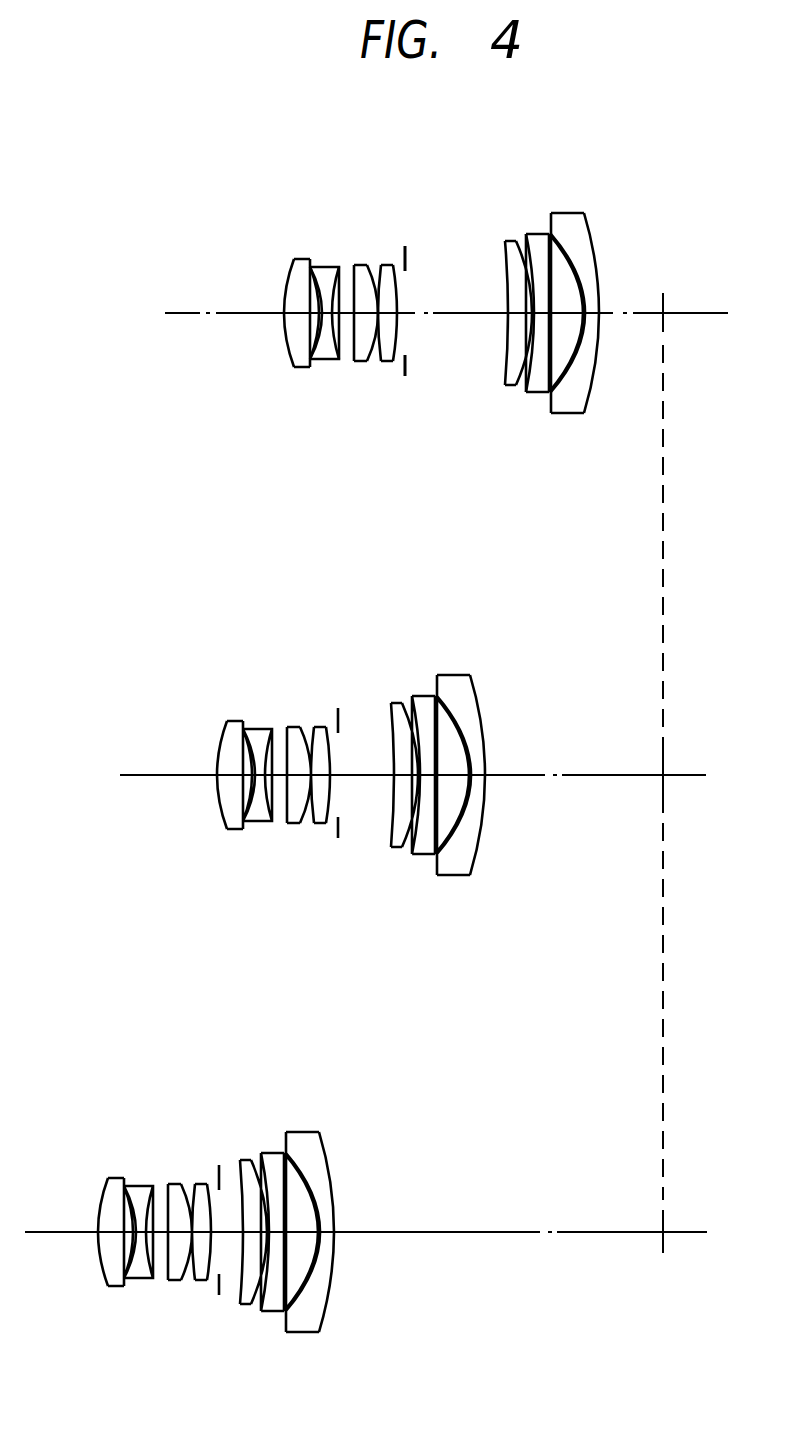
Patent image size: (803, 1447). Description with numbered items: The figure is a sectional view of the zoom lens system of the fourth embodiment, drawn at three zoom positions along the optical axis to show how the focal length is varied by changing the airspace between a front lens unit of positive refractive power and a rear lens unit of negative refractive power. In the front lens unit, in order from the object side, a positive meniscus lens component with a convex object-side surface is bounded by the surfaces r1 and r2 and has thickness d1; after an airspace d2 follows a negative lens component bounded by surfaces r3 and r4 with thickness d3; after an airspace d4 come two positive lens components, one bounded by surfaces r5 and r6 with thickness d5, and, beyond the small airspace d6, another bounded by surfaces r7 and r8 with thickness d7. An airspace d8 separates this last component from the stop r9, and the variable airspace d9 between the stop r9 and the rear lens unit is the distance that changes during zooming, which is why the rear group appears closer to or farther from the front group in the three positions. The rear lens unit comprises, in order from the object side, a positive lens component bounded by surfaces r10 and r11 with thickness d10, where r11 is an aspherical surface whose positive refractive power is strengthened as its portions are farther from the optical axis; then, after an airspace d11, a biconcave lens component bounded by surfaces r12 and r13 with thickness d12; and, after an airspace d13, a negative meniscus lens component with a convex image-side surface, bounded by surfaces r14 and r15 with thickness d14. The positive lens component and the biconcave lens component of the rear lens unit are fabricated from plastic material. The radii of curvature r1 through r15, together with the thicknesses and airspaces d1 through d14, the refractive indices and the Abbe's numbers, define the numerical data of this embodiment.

The radius of curvature of first lens surface r1 is at (284, 287).
The radius of curvature of second lens surface r2 is at (300, 277).
The radius of curvature of third lens surface r3 is at (315, 277).
The radius of curvature of fourth lens surface r4 is at (337, 278).
The radius of curvature of fifth lens surface r5 is at (353, 272).
The radius of curvature of sixth lens surface r6 is at (374, 278).
The radius of curvature of seventh lens surface r7 is at (382, 272).
The radius of curvature of eighth lens surface r8 is at (398, 272).
The stop r9 is at (406, 252).
The radius of curvature of tenth lens surface r10 is at (503, 272).
The radius of curvature of eleventh lens surface r11 is at (522, 262).
The radius of curvature of twelfth lens surface r12 is at (537, 260).
The radius of curvature of thirteenth lens surface r13 is at (540, 250).
The radius of curvature of fourteenth lens surface r14 is at (568, 250).
The radius of curvature of fifteenth lens surface r15 is at (597, 235).
The thickness of first lens component d1 is at (284, 330).
The airspace between first and second lens components d2 is at (305, 338).
The thickness of second lens component d3 is at (330, 350).
The airspace between second and third lens components d4 is at (360, 345).
The thickness of third lens component d5 is at (372, 343).
The airspace between third and fourth lens components d6 is at (384, 343).
The thickness of fourth lens component d7 is at (400, 343).
The airspace between fourth lens component and stop d8 is at (404, 340).
The variable airspace d9 is at (441, 327).
The thickness of fifth lens component d10 is at (512, 330).
The airspace between fifth and sixth lens components d11 is at (522, 330).
The thickness of sixth lens component d12 is at (543, 337).
The airspace between sixth and seventh lens components d13 is at (560, 332).
The thickness of seventh lens component d14 is at (594, 333).